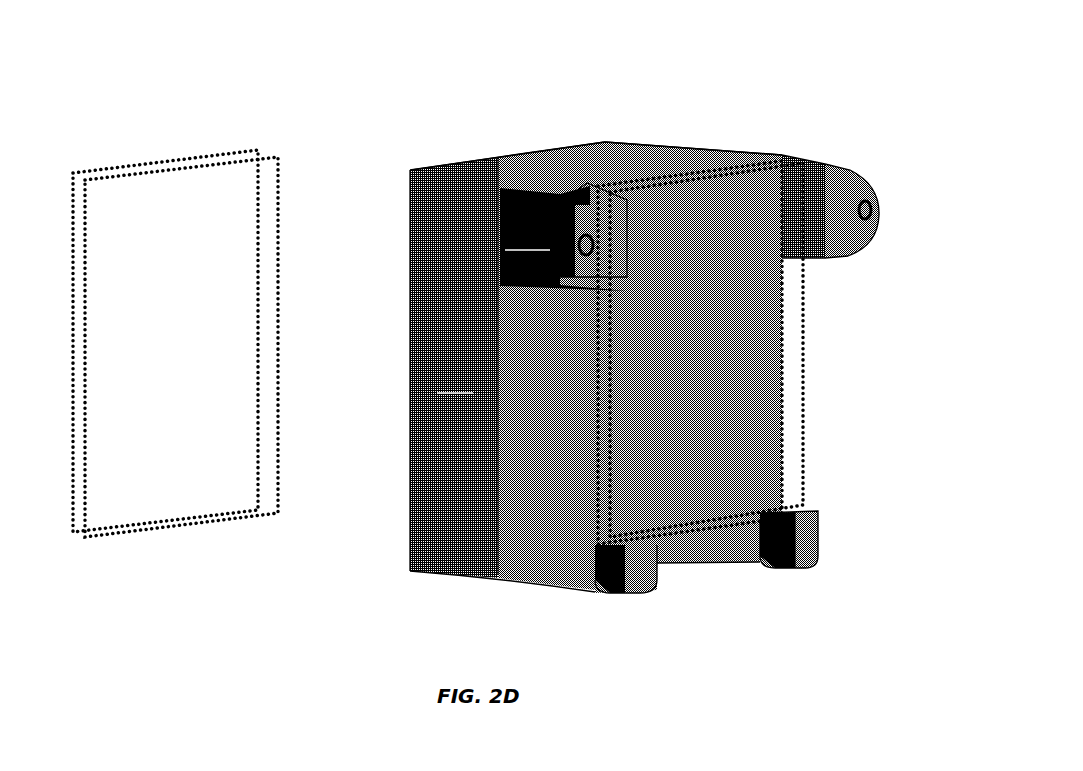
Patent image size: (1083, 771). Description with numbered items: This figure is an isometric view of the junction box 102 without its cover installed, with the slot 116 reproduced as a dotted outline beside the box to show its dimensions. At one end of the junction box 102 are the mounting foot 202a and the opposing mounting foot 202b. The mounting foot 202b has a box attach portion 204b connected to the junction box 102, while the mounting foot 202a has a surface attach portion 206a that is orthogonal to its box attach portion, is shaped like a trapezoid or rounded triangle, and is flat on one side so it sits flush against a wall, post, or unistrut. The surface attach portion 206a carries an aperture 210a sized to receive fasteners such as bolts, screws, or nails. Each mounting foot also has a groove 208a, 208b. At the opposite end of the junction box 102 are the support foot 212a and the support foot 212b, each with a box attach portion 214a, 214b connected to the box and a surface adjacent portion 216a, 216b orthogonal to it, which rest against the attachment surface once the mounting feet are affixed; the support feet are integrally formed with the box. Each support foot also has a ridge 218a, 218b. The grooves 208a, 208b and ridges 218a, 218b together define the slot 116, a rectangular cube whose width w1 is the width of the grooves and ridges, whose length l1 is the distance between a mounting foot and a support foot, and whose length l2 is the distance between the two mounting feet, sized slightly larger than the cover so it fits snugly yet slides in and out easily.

The junction box 102 is at (596, 367).
The slot 116 is at (193, 165).
The mounting foot 202a is at (883, 183).
The mounting foot 202b is at (527, 150).
The box attach portion 204b is at (563, 237).
The surface attach portion 206a is at (848, 232).
The groove 208a is at (792, 122).
The groove 208b is at (605, 136).
The aperture 210a is at (873, 215).
The support foot 212a is at (865, 549).
The support foot 212b is at (596, 600).
The box attach portion 214a is at (777, 558).
The box attach portion 214b is at (607, 580).
The surface adjacent portion 216a is at (813, 545).
The surface adjacent portion 216b is at (647, 572).
The ridge 218a is at (792, 511).
The ridge 218b is at (620, 529).
The width w1 is at (277, 297).
The length l1 is at (292, 158).
The length l2 is at (86, 548).